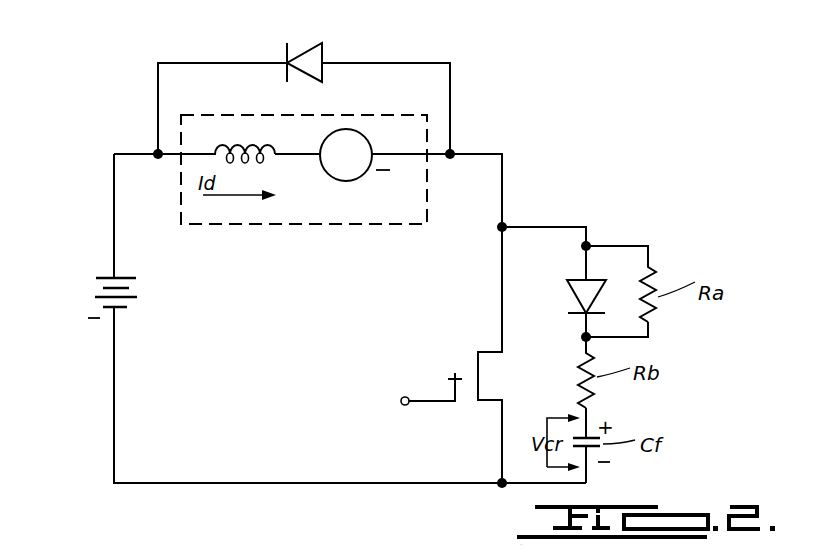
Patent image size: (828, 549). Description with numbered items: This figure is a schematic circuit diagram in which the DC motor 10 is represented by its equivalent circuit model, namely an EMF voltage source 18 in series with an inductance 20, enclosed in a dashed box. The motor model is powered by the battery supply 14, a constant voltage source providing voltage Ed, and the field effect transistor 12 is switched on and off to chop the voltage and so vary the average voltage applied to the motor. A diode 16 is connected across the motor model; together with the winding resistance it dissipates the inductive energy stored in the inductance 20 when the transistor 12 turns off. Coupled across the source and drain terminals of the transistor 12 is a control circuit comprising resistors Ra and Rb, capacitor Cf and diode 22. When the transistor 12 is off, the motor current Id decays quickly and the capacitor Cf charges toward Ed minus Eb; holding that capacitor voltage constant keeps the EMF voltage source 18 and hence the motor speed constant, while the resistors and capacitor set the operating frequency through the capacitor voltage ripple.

The DC motor 10 is at (304, 195).
The field effect transistor 12 is at (448, 380).
The battery supply 14 is at (96, 290).
The diode 16 is at (308, 58).
The EMF voltage source 18 is at (356, 177).
The inductance 20 is at (251, 145).
The diode 22 is at (575, 292).